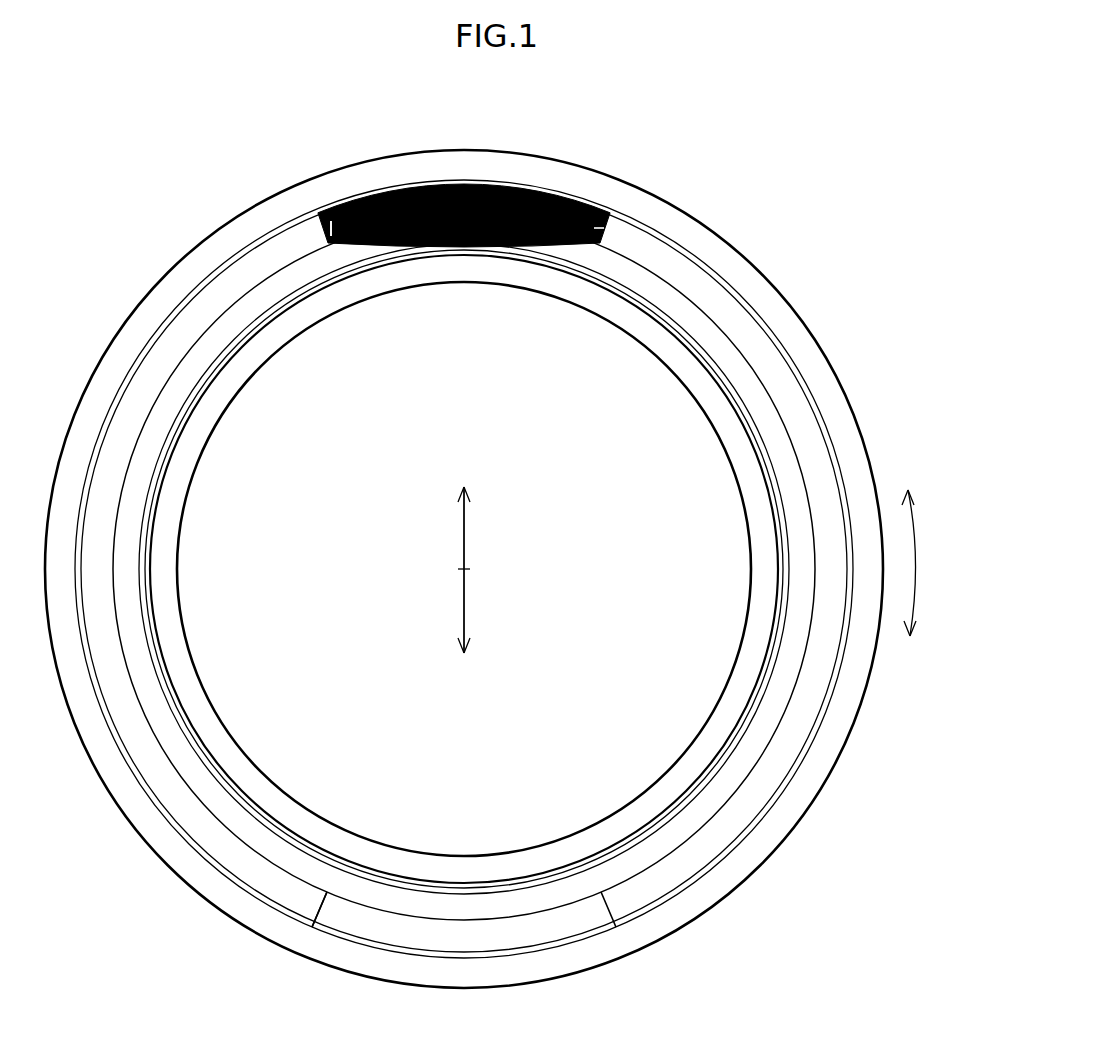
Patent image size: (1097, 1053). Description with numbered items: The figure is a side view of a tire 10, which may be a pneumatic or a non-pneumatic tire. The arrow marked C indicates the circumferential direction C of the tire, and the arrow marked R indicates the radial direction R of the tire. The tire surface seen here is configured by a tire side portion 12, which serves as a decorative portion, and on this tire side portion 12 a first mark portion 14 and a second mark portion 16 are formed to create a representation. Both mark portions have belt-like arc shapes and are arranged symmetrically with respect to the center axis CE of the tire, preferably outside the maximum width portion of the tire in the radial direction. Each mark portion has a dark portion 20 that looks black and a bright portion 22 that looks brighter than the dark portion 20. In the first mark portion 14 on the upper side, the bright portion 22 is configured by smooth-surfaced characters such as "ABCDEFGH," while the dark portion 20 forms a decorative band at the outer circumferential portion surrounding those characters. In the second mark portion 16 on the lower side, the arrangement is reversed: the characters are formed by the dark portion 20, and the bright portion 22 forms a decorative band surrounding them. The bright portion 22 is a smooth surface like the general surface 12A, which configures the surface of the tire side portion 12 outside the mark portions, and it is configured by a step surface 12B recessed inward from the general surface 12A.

The tire 10 is at (722, 182).
The tire side portion 12 is at (790, 347).
The general surface 12A is at (758, 797).
The step surface 12B is at (600, 229).
The first mark portion 14 is at (557, 185).
The second mark portion 16 is at (585, 940).
The dark portion 20 is at (327, 214).
The bright portion 22 is at (418, 198).
The radial direction R is at (463, 552).
The center axis CE is at (466, 568).
The circumferential direction C is at (917, 555).